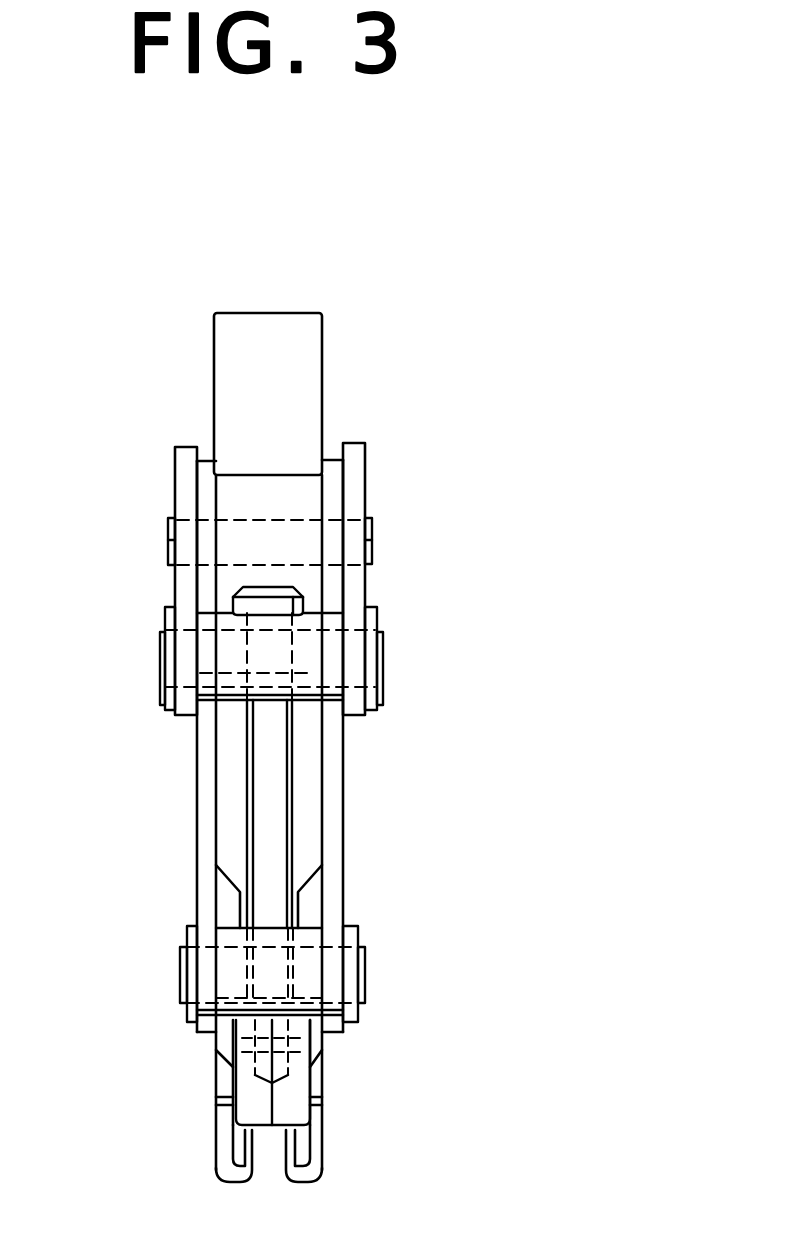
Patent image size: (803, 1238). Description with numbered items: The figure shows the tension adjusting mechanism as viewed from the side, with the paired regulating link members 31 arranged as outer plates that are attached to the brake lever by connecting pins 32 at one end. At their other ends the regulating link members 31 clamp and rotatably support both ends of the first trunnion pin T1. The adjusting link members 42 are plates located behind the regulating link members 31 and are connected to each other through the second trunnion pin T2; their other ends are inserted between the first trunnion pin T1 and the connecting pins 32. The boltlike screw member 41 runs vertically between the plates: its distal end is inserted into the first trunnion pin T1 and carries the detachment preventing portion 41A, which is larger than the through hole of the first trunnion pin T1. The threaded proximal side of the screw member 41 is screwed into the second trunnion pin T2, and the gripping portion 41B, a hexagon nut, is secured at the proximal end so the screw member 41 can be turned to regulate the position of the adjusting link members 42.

The regulating link member 31 is at (180, 586).
The connecting pin 32 is at (168, 542).
The screw member 41 is at (275, 793).
The detachment preventing portion 41A is at (303, 603).
The gripping portion 41B is at (290, 1092).
The adjusting link member 42 is at (193, 857).
The first trunnion pin T1 is at (308, 658).
The second trunnion pin T2 is at (227, 975).